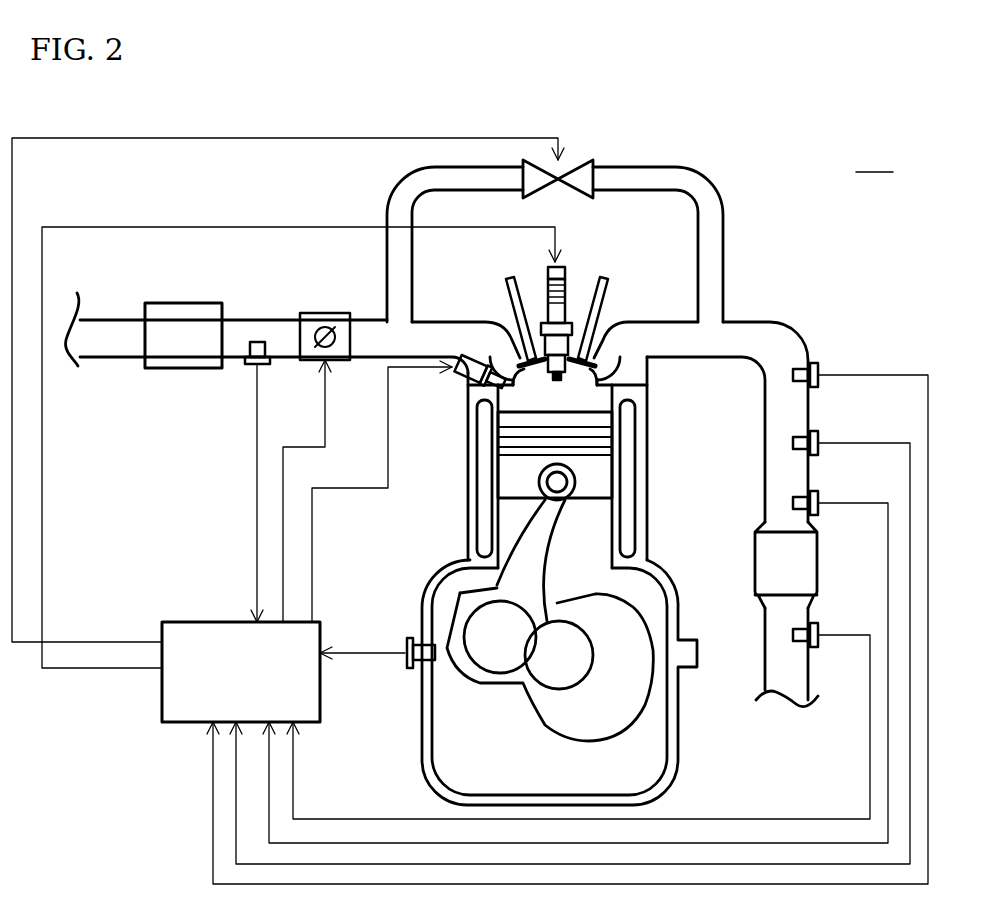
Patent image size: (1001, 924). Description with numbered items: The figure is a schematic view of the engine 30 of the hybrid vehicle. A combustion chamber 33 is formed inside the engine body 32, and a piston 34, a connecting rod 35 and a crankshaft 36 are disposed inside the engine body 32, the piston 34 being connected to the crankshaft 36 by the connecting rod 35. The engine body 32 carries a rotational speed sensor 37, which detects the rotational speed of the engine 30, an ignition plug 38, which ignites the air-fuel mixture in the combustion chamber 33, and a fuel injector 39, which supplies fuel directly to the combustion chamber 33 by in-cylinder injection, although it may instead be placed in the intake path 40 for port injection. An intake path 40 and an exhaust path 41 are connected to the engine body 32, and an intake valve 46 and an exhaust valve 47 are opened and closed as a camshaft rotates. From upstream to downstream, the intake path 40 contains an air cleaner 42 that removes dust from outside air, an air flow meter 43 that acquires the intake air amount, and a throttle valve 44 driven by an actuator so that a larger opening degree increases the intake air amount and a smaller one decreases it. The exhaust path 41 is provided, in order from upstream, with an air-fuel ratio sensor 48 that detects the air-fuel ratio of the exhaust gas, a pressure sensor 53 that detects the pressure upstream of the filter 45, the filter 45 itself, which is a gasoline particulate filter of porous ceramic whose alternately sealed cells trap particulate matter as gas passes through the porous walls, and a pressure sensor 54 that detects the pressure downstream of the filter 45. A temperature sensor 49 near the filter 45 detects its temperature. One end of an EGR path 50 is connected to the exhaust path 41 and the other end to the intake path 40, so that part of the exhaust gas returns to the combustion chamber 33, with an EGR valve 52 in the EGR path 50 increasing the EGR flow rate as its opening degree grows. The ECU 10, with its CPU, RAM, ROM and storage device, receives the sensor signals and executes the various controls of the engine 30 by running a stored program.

The ECU 10 is at (163, 722).
The engine 30 is at (874, 156).
The engine body 32 is at (692, 740).
The combustion chamber 33 is at (583, 401).
The piston 34 is at (522, 485).
The connecting rod 35 is at (526, 540).
The crankshaft 36 is at (468, 610).
The rotational speed sensor 37 is at (413, 668).
The ignition plug 38 is at (568, 273).
The fuel injector 39 is at (462, 382).
The intake path 40 is at (108, 358).
The exhaust path 41 is at (775, 318).
The air cleaner 42 is at (175, 368).
The air flow meter 43 is at (250, 364).
The throttle valve 44 is at (314, 312).
The filter 45 is at (817, 565).
The intake valve 46 is at (509, 276).
The exhaust valve 47 is at (605, 287).
The air-fuel ratio sensor 48 is at (813, 362).
The temperature sensor 49 is at (813, 493).
The EGR path 50 is at (723, 200).
The EGR valve 52 is at (553, 187).
The pressure sensor 53 is at (814, 432).
The pressure sensor 54 is at (818, 645).